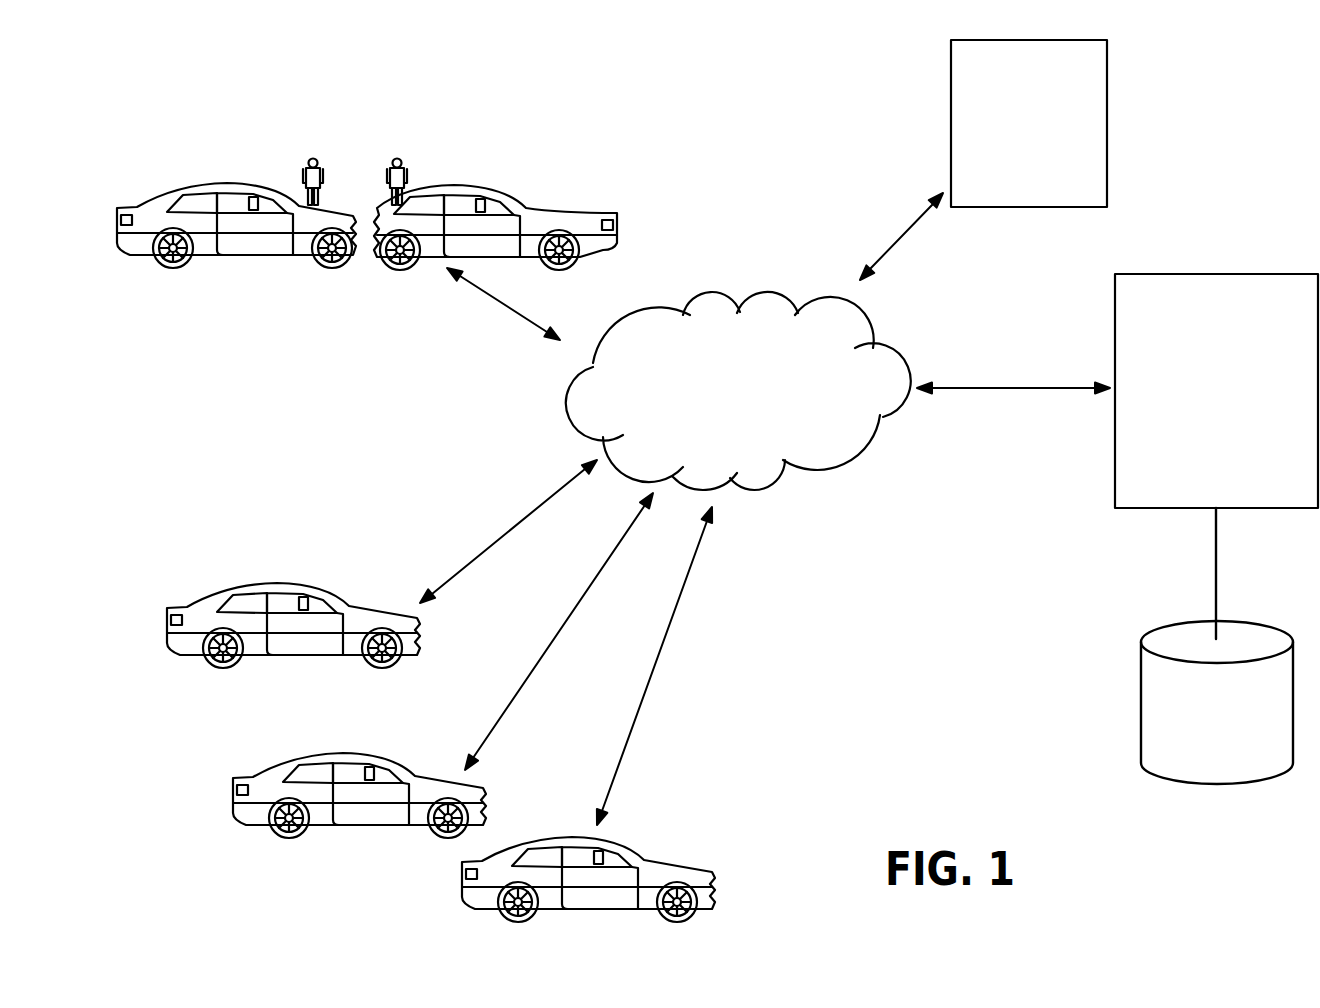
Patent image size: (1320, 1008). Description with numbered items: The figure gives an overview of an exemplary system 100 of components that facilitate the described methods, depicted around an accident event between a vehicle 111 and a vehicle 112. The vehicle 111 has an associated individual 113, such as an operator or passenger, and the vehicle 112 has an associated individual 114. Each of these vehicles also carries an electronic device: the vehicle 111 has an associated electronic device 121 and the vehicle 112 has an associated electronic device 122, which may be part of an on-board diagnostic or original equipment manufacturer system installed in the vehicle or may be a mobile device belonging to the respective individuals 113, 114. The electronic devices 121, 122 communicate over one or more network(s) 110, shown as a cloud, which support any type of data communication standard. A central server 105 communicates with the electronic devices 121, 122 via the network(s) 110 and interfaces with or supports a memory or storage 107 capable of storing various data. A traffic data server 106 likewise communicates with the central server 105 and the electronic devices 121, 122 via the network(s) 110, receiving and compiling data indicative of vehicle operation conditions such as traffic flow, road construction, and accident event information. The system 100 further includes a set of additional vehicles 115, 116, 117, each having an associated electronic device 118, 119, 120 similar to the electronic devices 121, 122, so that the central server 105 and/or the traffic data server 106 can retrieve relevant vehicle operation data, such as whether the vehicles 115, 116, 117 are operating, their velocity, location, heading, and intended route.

The system 100 is at (644, 110).
The central server 105 is at (1185, 273).
The traffic data server 106 is at (1087, 40).
The memory or storage 107 is at (1270, 640).
The network(s) 110 is at (712, 290).
The vehicle 111 is at (188, 188).
The vehicle 112 is at (503, 185).
The individual 113 is at (302, 174).
The individual 114 is at (387, 174).
The additional vehicle 115 is at (283, 583).
The additional vehicle 116 is at (346, 755).
The additional vehicle 117 is at (575, 838).
The electronic device 118 is at (312, 601).
The electronic device 119 is at (378, 772).
The electronic device 120 is at (606, 855).
The electronic device 121 is at (250, 210).
The electronic device 122 is at (470, 205).